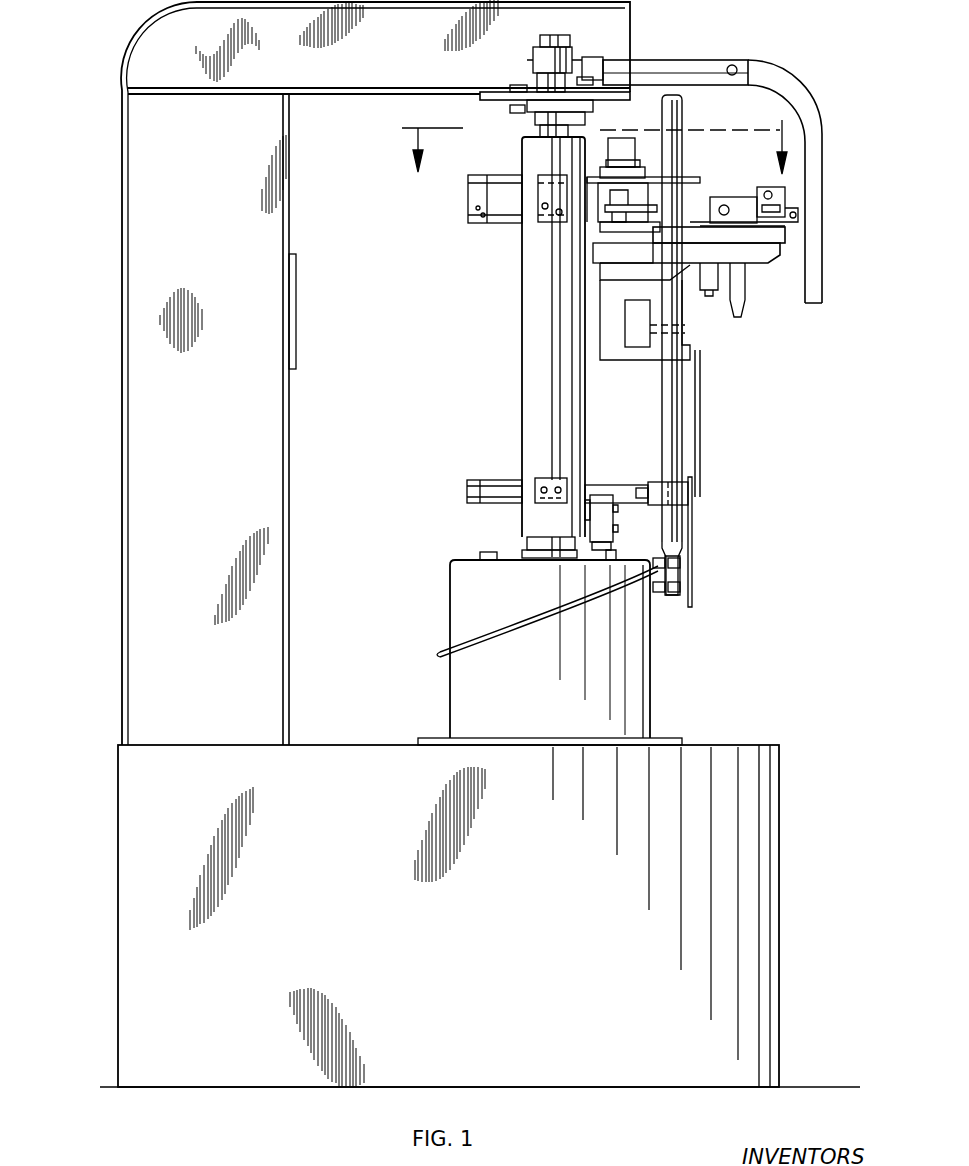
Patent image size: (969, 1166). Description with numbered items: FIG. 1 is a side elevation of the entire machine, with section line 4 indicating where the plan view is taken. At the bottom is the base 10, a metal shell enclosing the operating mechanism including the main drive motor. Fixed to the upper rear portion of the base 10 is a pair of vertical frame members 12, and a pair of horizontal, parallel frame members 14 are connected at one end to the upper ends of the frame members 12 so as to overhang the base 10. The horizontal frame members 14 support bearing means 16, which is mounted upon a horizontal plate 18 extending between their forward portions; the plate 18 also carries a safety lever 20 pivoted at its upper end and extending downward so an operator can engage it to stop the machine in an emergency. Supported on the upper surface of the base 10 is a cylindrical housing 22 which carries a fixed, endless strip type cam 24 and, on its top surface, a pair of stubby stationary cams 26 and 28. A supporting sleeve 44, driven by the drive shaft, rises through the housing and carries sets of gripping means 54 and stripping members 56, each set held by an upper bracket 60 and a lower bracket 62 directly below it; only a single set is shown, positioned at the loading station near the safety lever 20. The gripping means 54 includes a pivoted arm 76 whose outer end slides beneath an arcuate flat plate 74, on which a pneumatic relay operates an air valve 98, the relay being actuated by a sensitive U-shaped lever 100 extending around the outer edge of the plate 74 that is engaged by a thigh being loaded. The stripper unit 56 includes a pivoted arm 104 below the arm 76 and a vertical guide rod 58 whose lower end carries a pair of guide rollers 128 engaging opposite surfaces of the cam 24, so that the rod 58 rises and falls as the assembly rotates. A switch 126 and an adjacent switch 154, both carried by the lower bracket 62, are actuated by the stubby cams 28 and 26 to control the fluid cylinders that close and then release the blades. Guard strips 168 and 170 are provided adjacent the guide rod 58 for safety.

The base 10 is at (768, 862).
The vertical frame members 12 is at (290, 413).
The horizontal frame members 14 is at (374, 70).
The bearing means 16 is at (545, 60).
The horizontal plate 18 is at (496, 102).
The safety lever 20 is at (824, 150).
The cylindrical housing 22 is at (640, 672).
The strip type cam 24 is at (548, 616).
The stubby stationary cam 26 is at (486, 552).
The stubby stationary cam 28 is at (615, 565).
The supporting sleeve 44 is at (527, 327).
The gripping means 54 is at (697, 214).
The stripping members 56 is at (771, 264).
The vertical guide rod 58 is at (673, 414).
The upper bracket 60 is at (474, 231).
The lower bracket 62 is at (486, 480).
The arcuate flat plate 74 is at (760, 236).
The pivoted arm 76 is at (737, 215).
The air valve 98 is at (758, 192).
The lever 100 is at (790, 220).
The arm 104 is at (730, 290).
The switch 126 is at (612, 540).
The guide rollers 128 is at (678, 562).
The switch 154 is at (596, 521).
The guard strip 168 is at (702, 372).
The guard strip 170 is at (694, 590).
The section line 4- 4 is at (599, 139).